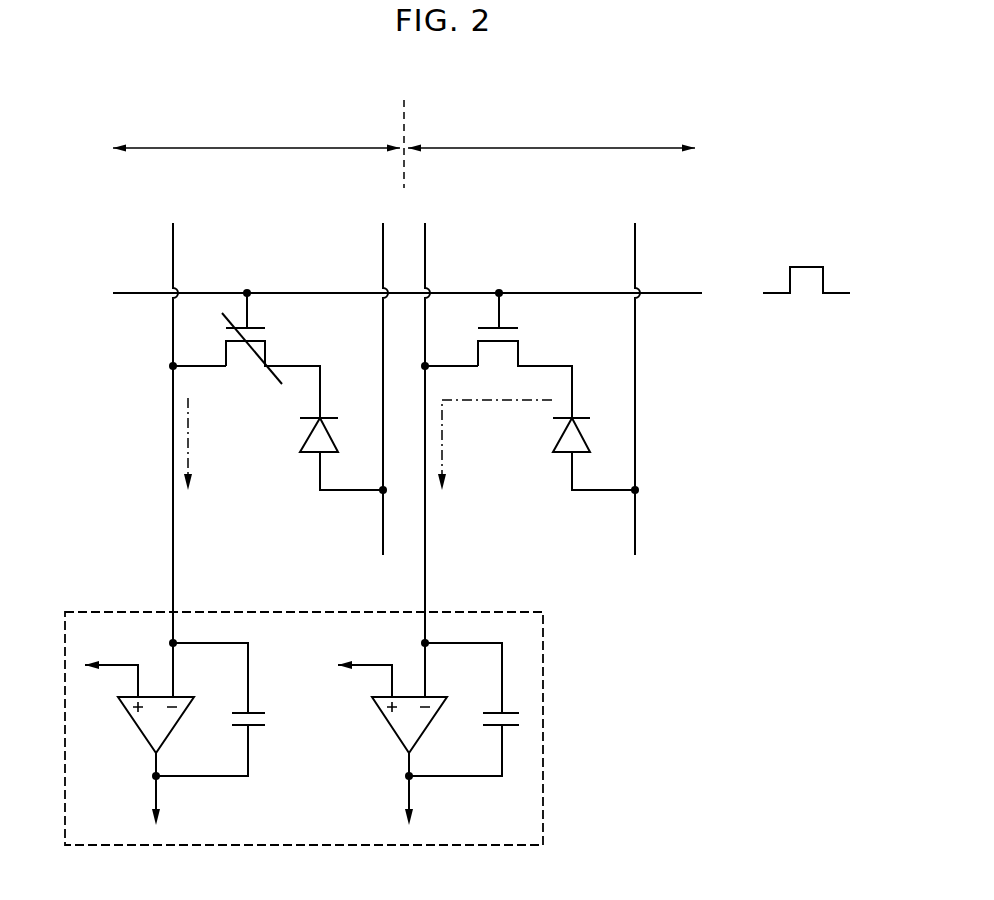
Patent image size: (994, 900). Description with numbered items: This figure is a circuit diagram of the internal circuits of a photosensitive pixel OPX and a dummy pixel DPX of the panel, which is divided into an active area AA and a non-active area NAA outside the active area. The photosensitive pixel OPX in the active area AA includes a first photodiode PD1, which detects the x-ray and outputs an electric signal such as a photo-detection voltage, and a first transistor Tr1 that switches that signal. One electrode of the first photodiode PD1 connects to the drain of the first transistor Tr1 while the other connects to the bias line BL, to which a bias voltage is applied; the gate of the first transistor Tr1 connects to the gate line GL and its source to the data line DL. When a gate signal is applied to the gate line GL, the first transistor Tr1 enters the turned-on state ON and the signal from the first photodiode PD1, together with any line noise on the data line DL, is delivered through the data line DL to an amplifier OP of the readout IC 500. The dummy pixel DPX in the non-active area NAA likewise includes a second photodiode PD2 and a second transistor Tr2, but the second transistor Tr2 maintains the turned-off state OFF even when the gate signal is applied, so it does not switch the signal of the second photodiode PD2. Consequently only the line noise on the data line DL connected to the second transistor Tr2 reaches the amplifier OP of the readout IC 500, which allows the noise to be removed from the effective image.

The readout IC 500 is at (345, 728).
The dummy pixel DPX is at (264, 265).
The photosensitive pixel OPX is at (517, 265).
The first transistor Tr1 is at (525, 355).
The second transistor Tr2 is at (271, 355).
The first photodiode PD1 is at (548, 435).
The second photodiode PD2 is at (296, 435).
The amplifier OP is at (273, 725).
The data line DL is at (299, 446).
The bias line BL is at (509, 375).
The gate line GL is at (481, 286).
The non-active area NAA is at (258, 144).
The active area AA is at (551, 133).
The turned-on state ON is at (518, 350).
The turned-off state OFF is at (271, 350).